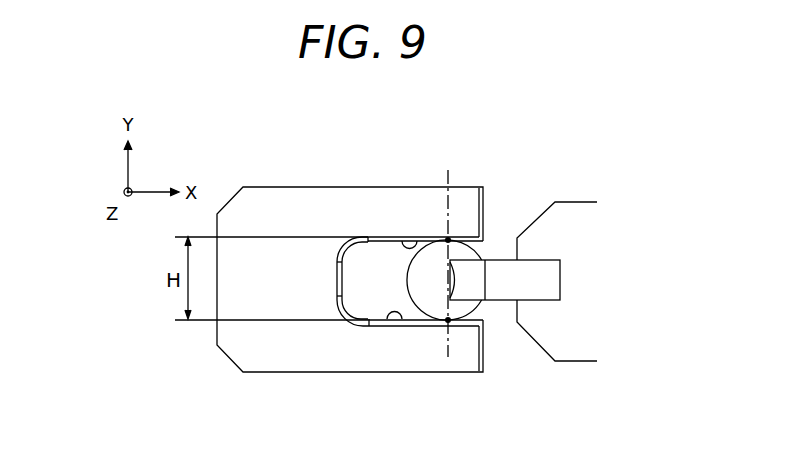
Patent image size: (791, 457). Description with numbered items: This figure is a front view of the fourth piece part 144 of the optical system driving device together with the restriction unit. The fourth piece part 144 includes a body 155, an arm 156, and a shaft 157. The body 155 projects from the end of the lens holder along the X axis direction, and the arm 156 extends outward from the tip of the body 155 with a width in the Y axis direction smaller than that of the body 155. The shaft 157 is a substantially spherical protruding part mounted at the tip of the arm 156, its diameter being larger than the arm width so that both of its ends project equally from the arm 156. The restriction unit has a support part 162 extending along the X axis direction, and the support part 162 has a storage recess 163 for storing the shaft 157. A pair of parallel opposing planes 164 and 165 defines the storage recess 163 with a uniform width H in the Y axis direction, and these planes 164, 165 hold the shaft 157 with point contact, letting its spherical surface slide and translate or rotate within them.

The fourth piece part 144 is at (582, 195).
The body 155 is at (583, 354).
The arm 156 is at (505, 267).
The shaft 157 is at (437, 300).
The support part 162 is at (265, 200).
The storage recess 163 is at (383, 232).
The plane 164 is at (421, 241).
The plane 165 is at (390, 312).